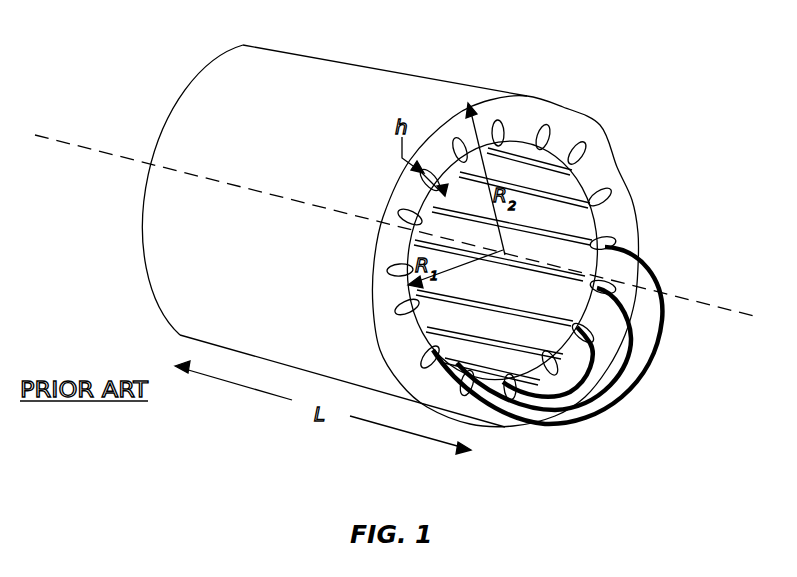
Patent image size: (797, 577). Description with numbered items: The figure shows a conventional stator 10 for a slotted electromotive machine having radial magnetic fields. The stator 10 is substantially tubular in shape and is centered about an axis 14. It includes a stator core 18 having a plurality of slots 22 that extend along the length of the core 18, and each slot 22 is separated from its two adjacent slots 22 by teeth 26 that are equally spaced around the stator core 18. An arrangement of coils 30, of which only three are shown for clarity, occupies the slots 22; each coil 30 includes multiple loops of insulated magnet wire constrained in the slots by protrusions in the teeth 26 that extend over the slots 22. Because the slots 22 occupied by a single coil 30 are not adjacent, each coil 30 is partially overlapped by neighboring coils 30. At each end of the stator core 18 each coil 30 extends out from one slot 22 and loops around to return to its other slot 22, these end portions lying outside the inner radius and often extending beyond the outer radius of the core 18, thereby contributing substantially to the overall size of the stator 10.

The stator 10 is at (698, 114).
The axis 14 is at (55, 138).
The stator core 18 is at (387, 90).
The slots 22 is at (545, 140).
The teeth 26 is at (520, 138).
The coils 30 is at (650, 357).